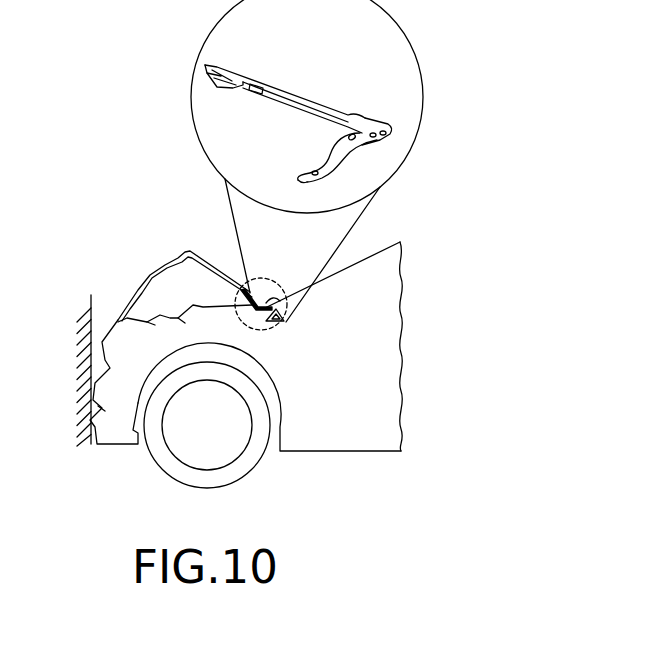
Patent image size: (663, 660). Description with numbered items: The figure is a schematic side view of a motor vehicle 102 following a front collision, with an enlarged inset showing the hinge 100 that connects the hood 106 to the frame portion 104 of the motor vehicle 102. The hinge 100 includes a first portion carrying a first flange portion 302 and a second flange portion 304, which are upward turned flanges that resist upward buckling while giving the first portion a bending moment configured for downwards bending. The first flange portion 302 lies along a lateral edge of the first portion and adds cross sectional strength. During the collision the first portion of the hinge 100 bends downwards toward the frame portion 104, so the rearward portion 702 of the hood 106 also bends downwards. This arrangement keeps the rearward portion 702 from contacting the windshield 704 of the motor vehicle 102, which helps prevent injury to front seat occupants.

The hinge 100 is at (287, 313).
The motor vehicle 102 is at (393, 229).
The frame portion 104 is at (210, 307).
The hood 106 is at (184, 255).
The first flange portion 302 is at (302, 115).
The second flange portion 304 is at (300, 93).
The rearward portion 702 is at (290, 327).
The windshield 704 is at (349, 270).